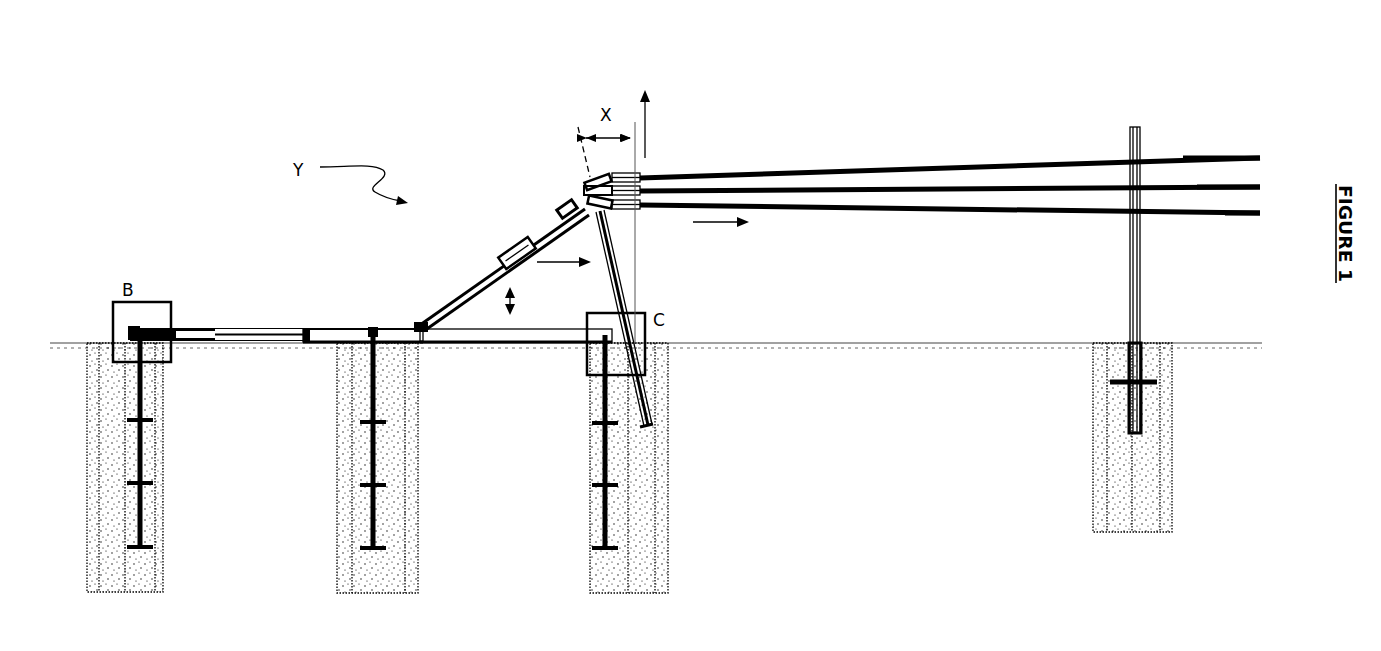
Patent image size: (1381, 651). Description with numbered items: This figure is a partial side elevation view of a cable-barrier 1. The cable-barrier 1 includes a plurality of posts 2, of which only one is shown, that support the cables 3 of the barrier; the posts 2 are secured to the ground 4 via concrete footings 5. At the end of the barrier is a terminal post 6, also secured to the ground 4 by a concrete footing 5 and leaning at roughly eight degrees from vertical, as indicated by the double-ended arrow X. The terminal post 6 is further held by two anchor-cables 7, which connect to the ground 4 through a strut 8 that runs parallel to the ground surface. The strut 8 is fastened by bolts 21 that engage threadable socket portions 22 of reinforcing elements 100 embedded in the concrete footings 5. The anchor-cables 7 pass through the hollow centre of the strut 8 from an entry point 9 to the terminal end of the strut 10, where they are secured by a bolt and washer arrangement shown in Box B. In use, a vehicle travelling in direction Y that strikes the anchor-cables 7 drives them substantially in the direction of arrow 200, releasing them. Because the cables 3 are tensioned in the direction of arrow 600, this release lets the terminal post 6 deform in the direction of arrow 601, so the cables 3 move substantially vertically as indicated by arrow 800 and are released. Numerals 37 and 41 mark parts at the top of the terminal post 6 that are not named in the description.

The cable-barrier 1 is at (903, 165).
The post 2 is at (1130, 128).
The cables 3 is at (1225, 213).
The ground 4 is at (913, 345).
The concrete footing 5 is at (1145, 483).
The terminal post 6 is at (618, 282).
The anchor-cables 7 is at (450, 298).
The strut 8 is at (540, 345).
The entry point 9 is at (420, 335).
The terminal end of the strut 10 is at (132, 333).
The bolts 21 is at (420, 323).
The threadable socket portions 22 is at (370, 340).
The conductor attachment head 37 is at (562, 208).
The strut joint 41 is at (563, 210).
The reinforcing elements 100 is at (152, 483).
The arrow indicating anchor-cable movement direction 200 is at (528, 303).
The arrow indicating cable tension direction 600 is at (721, 234).
The arrow indicating terminal post deformation direction 601 is at (564, 275).
The arrow indicating vertical cable movement 800 is at (663, 124).